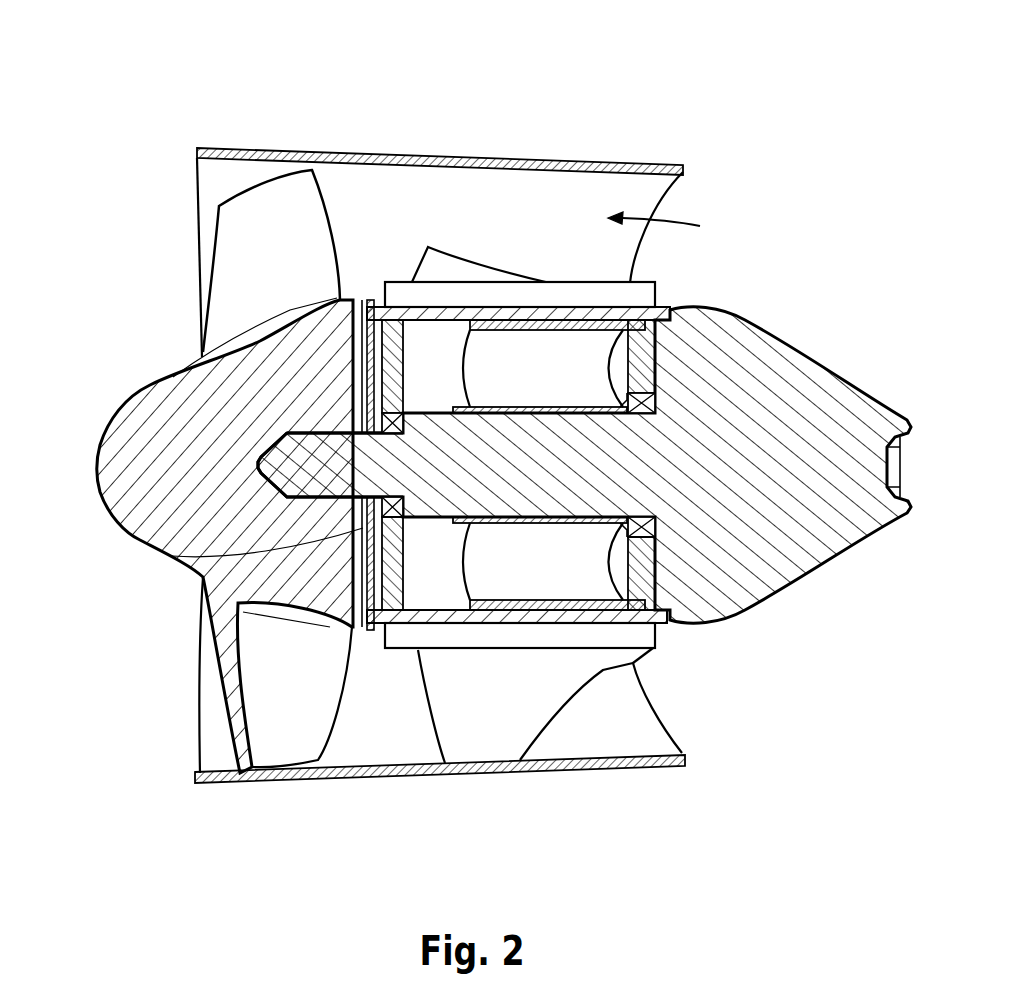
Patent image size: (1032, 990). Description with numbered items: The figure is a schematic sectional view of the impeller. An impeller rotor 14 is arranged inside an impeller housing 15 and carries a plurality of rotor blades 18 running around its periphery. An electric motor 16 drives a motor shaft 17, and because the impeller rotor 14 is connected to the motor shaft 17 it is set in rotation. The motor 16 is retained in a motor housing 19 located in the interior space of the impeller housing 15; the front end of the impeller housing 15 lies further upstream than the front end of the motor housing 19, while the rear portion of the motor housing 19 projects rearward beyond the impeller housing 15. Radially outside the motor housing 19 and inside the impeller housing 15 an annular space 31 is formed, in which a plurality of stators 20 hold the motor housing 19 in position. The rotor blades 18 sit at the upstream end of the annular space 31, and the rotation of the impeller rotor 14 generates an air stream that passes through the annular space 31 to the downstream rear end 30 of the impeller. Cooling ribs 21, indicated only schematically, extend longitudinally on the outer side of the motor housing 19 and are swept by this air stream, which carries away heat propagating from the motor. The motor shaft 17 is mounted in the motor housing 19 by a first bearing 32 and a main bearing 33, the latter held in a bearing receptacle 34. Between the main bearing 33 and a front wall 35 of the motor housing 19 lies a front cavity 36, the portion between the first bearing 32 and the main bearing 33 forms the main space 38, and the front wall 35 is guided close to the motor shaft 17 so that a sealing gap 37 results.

The impeller rotor 14 is at (168, 378).
The impeller housing 15 is at (481, 162).
The electric motor 16 is at (575, 367).
The motor shaft 17 is at (418, 440).
The rotor blades 18 is at (265, 222).
The motor housing 19 is at (652, 620).
The stators 20 is at (413, 263).
The cooling ribs 21 is at (543, 637).
The rear end 30 is at (866, 380).
The annular space 31 is at (669, 229).
The first bearing 32 is at (640, 405).
The main bearing 33 is at (205, 593).
The bearing receptacle 34 is at (392, 352).
The front wall 35 is at (368, 338).
The front cavity 36 is at (378, 392).
The sealing gap 37 is at (390, 517).
The main space 38 is at (577, 570).